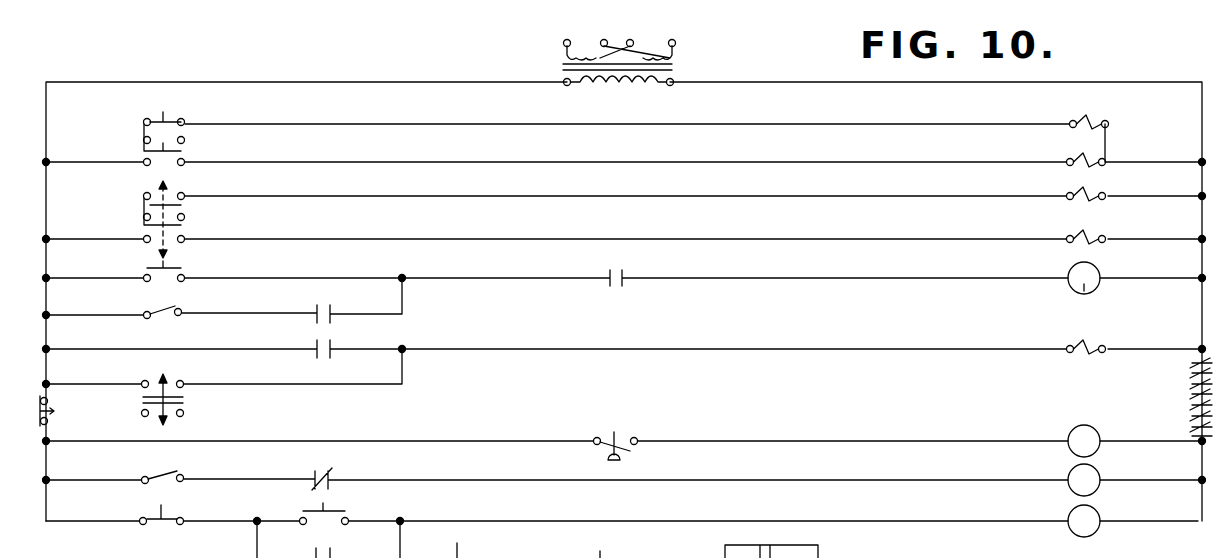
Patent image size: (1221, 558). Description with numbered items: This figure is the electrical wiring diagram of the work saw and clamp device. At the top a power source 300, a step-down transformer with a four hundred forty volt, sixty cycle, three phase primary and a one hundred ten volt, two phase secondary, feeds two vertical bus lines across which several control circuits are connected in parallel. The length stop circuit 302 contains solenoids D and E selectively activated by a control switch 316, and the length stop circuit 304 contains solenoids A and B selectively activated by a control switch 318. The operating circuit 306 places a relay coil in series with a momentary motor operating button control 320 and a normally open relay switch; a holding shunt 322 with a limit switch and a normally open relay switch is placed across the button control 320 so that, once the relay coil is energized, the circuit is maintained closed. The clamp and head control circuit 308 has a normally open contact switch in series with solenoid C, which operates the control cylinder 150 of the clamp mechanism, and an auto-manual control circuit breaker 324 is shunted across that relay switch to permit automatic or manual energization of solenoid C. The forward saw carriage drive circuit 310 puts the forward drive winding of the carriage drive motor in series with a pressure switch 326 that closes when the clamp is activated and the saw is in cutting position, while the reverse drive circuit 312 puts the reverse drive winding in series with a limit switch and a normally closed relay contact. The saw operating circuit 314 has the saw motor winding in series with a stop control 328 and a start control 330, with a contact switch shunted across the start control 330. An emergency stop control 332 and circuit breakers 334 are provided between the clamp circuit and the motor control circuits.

The power source 300 is at (692, 67).
The length stop circuit 302 is at (703, 117).
The length stop circuit 304 is at (646, 192).
The operating circuit 306 is at (533, 274).
The clamp and head control circuit 308 is at (576, 344).
The forward saw carriage drive circuit 310 is at (504, 436).
The reverse drive circuit 312 is at (507, 476).
The saw operating circuit 314 is at (508, 516).
The control switch 316 is at (155, 133).
The control switch 318 is at (156, 217).
The momentary motor operating button control 320 is at (176, 270).
The holding shunt 322 is at (404, 297).
The auto-manual control circuit breaker 324 is at (140, 396).
The pressure switch 326 is at (640, 449).
The stop control 328 is at (182, 527).
The start control 330 is at (318, 508).
The emergency stop control 332 is at (52, 417).
The circuit breakers 334 is at (1182, 407).
The control cylinder 150 is at (725, 551).